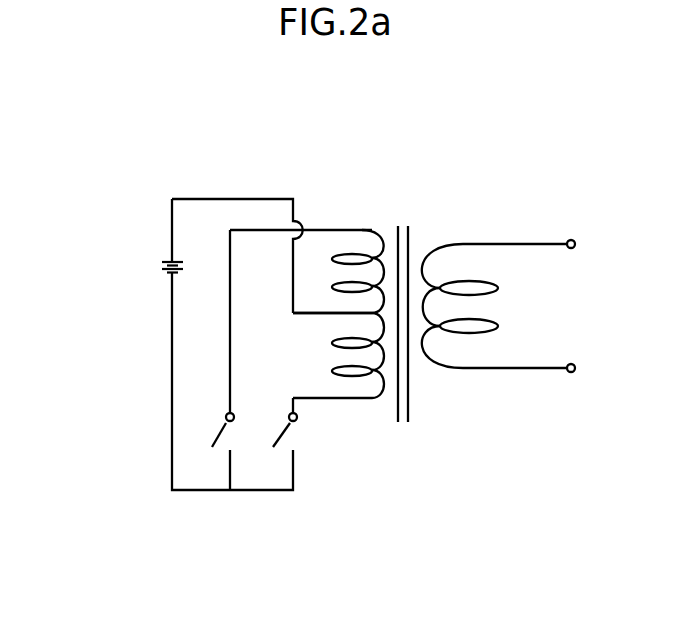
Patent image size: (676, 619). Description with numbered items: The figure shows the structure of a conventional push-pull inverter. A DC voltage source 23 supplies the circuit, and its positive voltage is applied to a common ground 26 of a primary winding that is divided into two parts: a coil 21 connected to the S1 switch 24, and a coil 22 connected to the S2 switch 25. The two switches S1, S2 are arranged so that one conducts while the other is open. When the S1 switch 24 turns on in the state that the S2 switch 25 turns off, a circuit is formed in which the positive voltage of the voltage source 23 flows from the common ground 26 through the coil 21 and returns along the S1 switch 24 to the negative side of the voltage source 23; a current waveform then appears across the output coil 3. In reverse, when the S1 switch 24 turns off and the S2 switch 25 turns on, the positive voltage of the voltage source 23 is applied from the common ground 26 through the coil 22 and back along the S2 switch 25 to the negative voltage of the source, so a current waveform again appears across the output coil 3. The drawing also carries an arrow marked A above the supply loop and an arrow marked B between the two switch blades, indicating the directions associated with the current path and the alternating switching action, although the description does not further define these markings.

The output coil 3 is at (497, 289).
The coil 21 is at (362, 230).
The coil 22 is at (378, 398).
The voltage source 23 is at (170, 272).
The S1 switch 24 is at (212, 477).
The S2 switch 25 is at (317, 454).
The common ground 26 is at (293, 313).
The S1 switch S1 is at (214, 423).
The S2 switch S2 is at (305, 423).
The current direction A is at (274, 174).
The switching direction B is at (249, 432).